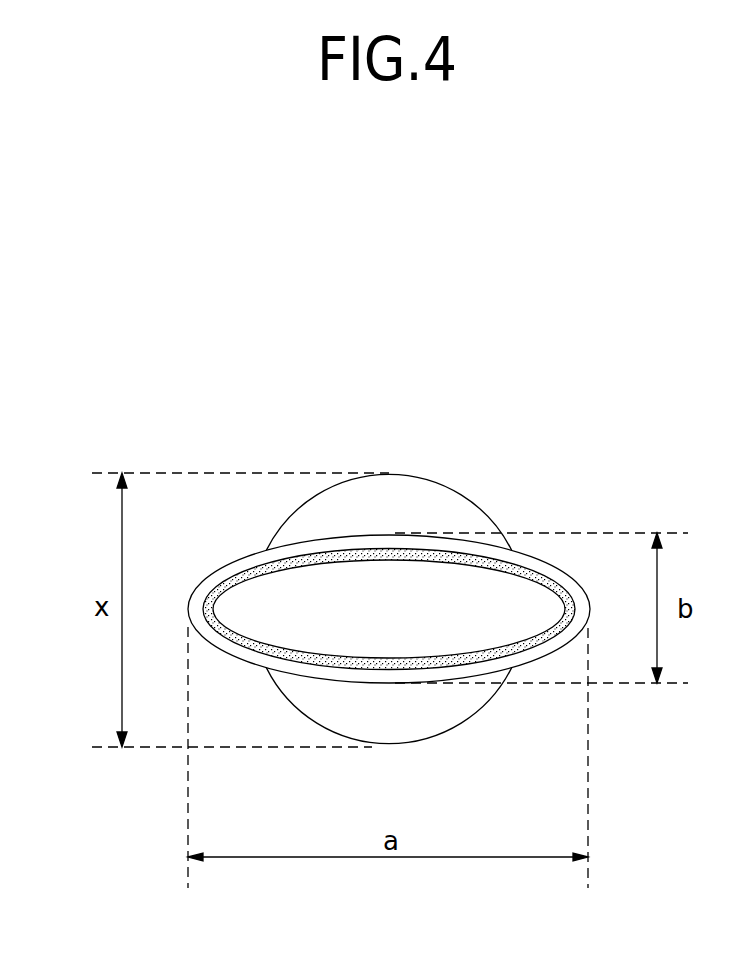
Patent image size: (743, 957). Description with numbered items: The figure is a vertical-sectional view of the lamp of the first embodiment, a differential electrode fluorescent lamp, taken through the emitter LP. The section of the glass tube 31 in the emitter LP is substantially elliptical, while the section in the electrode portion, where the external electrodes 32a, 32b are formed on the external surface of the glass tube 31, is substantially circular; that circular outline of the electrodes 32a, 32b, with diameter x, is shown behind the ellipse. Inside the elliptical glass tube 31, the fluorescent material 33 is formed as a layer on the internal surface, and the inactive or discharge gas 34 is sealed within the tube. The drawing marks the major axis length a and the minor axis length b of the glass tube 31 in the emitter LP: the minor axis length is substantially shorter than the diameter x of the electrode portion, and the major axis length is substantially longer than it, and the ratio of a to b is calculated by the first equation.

The emitter LP is at (436, 583).
The electrode 32a is at (450, 498).
The electrode 32b is at (388, 608).
The glass tube 31 is at (545, 567).
The fluorescent material 33 is at (573, 627).
The inactive gas 34 is at (533, 605).